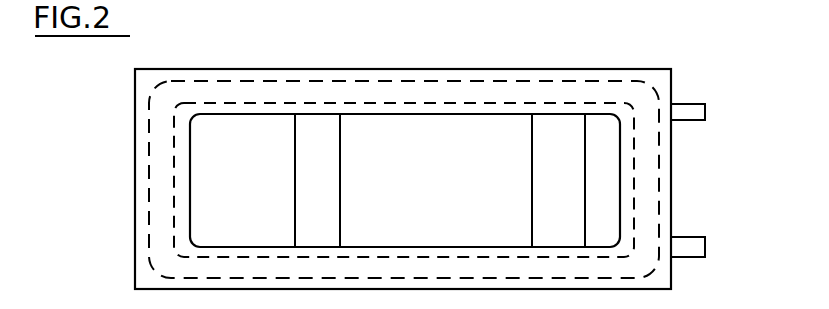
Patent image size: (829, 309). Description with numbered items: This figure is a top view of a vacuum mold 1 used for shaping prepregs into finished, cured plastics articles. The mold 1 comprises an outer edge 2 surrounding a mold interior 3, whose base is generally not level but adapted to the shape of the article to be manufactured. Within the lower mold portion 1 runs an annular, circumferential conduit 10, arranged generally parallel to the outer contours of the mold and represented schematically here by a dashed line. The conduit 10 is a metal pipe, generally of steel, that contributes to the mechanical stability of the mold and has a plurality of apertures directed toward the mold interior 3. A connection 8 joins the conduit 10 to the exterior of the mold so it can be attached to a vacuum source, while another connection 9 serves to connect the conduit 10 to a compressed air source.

The mold 1 is at (452, 60).
The edge 2 is at (671, 151).
The mold interior 3 is at (432, 198).
The connection 8 is at (681, 112).
The connection 9 is at (700, 247).
The conduit 10 is at (148, 184).